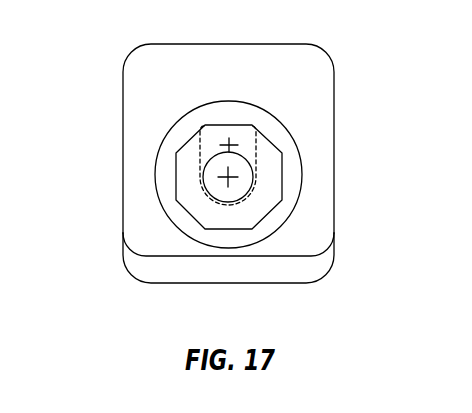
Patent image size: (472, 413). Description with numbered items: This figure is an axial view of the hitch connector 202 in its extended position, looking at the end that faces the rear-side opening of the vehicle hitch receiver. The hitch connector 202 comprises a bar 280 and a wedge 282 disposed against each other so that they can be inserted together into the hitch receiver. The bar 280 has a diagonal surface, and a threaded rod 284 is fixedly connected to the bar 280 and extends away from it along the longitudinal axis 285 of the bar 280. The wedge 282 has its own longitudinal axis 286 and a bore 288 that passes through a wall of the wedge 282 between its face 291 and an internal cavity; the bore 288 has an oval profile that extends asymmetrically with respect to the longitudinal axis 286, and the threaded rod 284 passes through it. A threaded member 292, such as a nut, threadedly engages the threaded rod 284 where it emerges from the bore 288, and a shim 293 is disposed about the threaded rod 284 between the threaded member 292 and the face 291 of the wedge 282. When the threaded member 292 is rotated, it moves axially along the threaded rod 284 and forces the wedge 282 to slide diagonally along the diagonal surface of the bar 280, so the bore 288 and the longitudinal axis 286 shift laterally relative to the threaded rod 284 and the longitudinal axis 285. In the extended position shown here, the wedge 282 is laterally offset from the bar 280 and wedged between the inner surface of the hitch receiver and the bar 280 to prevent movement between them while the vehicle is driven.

The hitch connector 202 is at (90, 58).
The bar 280 is at (303, 283).
The wedge 282 is at (334, 108).
The threaded rod 284 is at (226, 206).
The longitudinal axis of the bar 285 is at (229, 178).
The longitudinal axis of the wedge 286 is at (229, 143).
The bore 288 is at (256, 152).
The face 291 is at (150, 115).
The threaded member 292 is at (176, 193).
The shim 293 is at (154, 166).